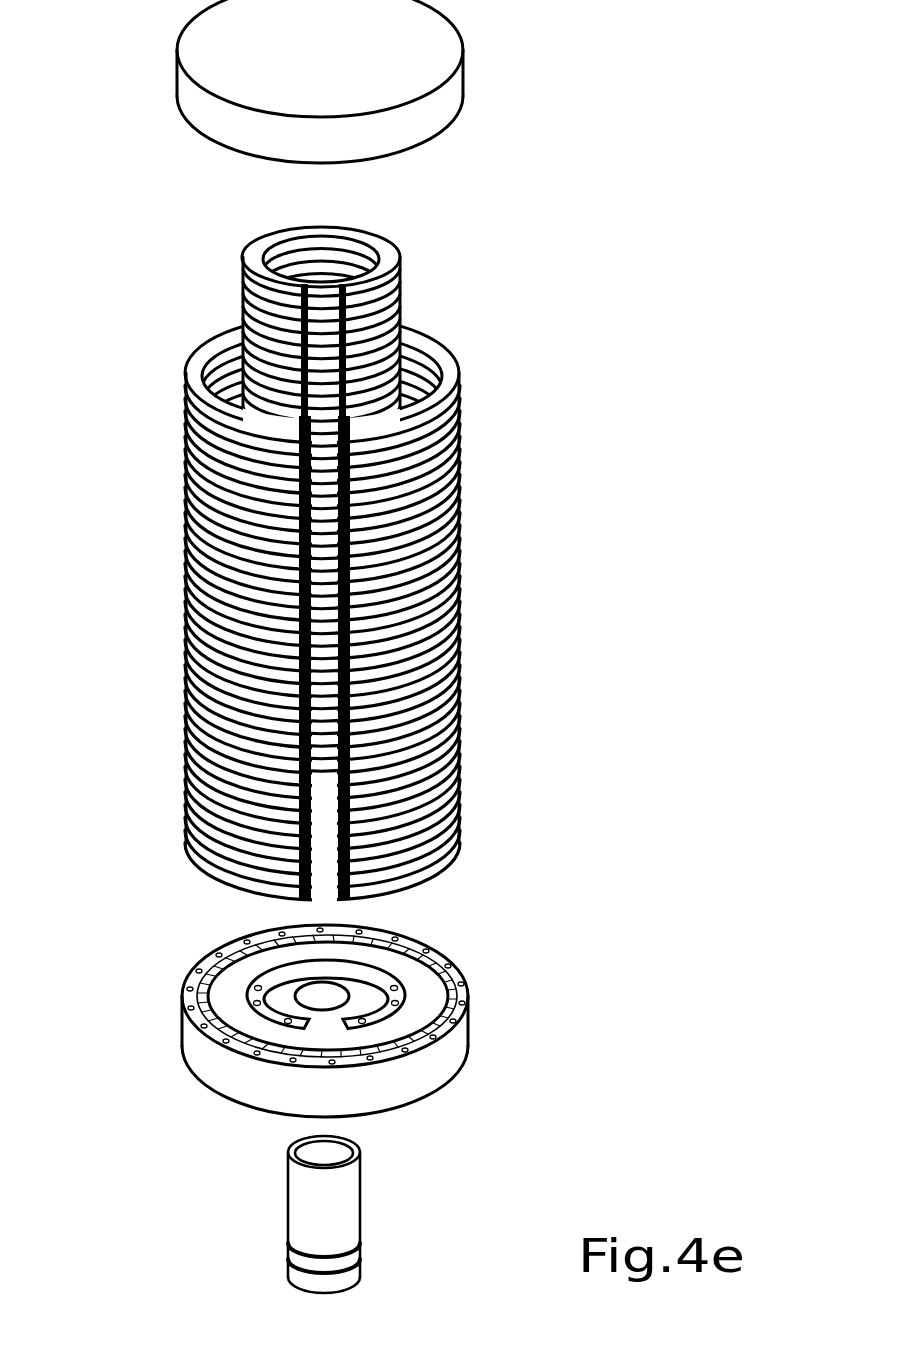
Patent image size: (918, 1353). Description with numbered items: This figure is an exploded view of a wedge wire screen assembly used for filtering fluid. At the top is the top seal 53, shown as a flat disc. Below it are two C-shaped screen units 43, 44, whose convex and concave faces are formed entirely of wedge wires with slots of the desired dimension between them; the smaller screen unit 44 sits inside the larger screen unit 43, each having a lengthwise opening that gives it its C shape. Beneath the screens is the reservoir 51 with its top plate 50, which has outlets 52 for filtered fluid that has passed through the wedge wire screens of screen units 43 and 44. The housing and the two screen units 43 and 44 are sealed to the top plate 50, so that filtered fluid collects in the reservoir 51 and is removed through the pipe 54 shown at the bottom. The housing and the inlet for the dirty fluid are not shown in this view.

The C-shaped screen unit 43 is at (473, 432).
The C-shaped screen unit 44 is at (410, 264).
The top plate 50 is at (464, 975).
The reservoir 51 is at (452, 1051).
The outlets 52 is at (180, 1003).
The top seal 53 is at (355, 62).
The pipe 54 is at (318, 1208).